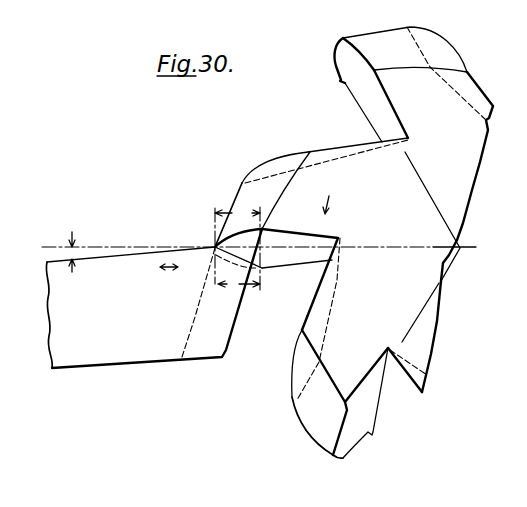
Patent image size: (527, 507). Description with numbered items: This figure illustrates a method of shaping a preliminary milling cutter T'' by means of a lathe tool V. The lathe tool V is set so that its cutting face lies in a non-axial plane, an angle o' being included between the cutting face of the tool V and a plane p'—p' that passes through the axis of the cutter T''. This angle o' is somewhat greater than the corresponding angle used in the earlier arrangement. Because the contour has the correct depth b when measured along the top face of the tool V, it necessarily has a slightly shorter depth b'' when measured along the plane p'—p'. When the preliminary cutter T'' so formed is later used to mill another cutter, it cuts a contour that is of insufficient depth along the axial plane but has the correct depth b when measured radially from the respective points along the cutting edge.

The lathe tool V is at (154, 298).
The preliminary cutter T'' is at (354, 242).
The plane through the axis of the cutter p' is at (251, 252).
The angle o' is at (123, 239).
The depth b is at (239, 285).
The depth b'' is at (237, 246).